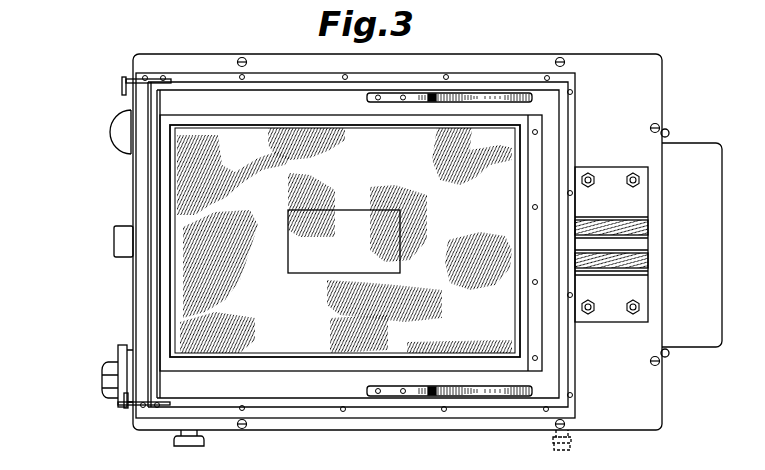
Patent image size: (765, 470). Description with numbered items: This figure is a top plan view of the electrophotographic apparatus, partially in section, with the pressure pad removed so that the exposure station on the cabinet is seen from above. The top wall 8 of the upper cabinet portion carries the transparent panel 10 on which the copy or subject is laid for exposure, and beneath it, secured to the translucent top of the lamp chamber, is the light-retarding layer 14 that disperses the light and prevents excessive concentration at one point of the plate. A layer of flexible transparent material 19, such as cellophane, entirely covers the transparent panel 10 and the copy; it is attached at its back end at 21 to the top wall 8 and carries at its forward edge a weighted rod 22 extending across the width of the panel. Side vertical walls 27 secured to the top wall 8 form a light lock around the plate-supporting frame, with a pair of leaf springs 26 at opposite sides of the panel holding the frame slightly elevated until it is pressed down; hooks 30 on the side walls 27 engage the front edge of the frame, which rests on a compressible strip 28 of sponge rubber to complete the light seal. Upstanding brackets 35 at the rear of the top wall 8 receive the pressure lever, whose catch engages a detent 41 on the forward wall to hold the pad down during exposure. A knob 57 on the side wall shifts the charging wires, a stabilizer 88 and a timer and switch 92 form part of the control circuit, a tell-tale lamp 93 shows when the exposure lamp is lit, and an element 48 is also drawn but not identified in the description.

The top wall 8 is at (652, 87).
The transparent panel 10 is at (517, 335).
The light-retarding layer 14 is at (330, 274).
The layer of flexible transparent material 19 is at (270, 357).
The attachment point 21 is at (538, 153).
The weighted rod 22 is at (157, 288).
The leaf springs 26 is at (493, 92).
The side vertical walls 27 is at (563, 378).
The strip of sponge rubber 28 is at (147, 312).
The hooks 30 is at (122, 80).
The upstanding brackets 35 is at (609, 182).
The detent 41 is at (114, 242).
The glass edge 48 is at (338, 354).
The handle or knob 57 is at (200, 443).
The stabilizer 88 is at (706, 153).
The timer and switch 92 is at (115, 360).
The tell-tale lamp 93 is at (118, 130).